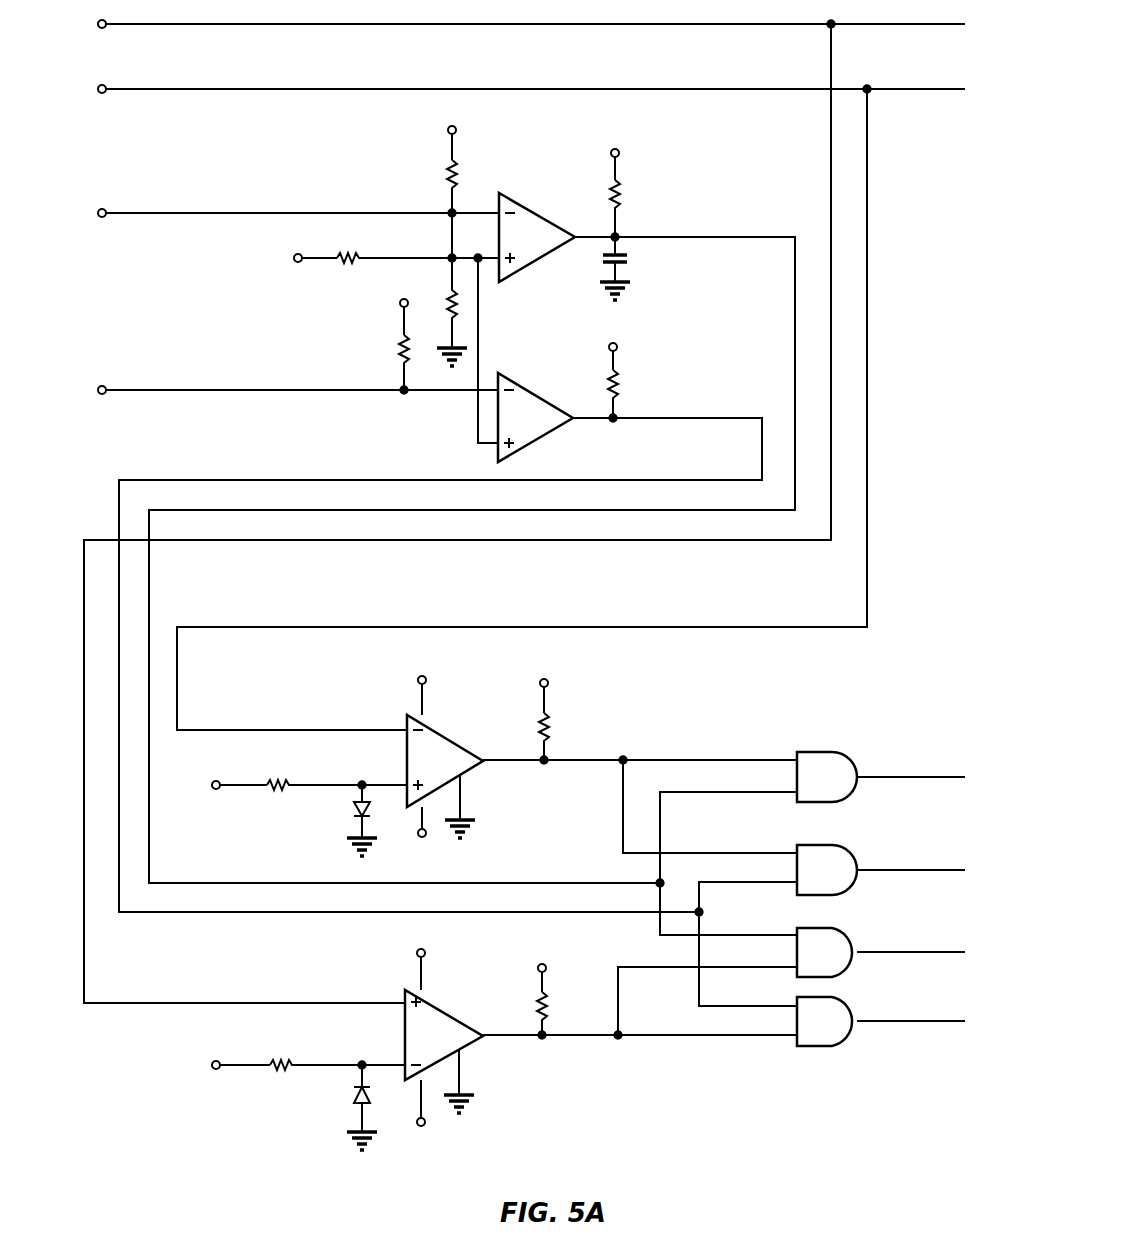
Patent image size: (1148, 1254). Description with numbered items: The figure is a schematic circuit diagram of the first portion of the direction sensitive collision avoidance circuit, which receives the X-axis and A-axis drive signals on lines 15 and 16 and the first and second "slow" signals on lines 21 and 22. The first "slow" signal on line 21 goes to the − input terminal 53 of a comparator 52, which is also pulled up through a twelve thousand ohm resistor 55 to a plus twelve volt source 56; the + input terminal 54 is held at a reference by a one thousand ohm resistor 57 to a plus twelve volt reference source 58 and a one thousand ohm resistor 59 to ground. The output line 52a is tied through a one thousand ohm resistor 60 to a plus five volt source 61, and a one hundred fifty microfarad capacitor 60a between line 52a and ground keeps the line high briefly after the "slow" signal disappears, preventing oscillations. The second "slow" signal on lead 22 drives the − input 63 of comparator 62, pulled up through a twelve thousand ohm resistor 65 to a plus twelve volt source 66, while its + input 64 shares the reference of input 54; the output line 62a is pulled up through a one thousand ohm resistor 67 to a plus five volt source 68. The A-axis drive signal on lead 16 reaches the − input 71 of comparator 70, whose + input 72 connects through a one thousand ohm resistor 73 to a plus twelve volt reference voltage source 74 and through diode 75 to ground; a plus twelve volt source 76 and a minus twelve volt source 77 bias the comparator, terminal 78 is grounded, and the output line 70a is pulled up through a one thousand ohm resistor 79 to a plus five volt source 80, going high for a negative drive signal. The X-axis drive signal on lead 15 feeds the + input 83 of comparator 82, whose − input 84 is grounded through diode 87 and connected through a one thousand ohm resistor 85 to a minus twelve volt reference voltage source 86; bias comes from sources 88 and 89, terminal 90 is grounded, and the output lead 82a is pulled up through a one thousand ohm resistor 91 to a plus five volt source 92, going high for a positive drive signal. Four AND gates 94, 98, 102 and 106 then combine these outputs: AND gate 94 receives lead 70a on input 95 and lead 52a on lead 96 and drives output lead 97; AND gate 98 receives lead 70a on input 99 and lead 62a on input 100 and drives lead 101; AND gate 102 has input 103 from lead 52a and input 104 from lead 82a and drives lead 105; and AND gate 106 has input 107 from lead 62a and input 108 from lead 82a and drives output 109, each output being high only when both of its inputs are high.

The line 15 is at (436, 22).
The line 16 is at (434, 88).
The line 21 is at (346, 211).
The lead 22 is at (368, 393).
The comparator 52 is at (536, 215).
The output line 52a is at (582, 235).
The − input terminal 53 is at (490, 213).
The + input terminal 54 is at (497, 280).
The 12,000 ohm resistor 55 is at (446, 176).
The +12 volt source 56 is at (447, 131).
The 1,000 ohm resistor 57 is at (345, 266).
The +12 volt reference source 58 is at (300, 266).
The 1,000 ohm resistor 59 is at (460, 318).
The 1,000 ohm resistor 60 is at (628, 198).
The 150 microfarad capacitor 60a is at (630, 263).
The +5 volt source 61 is at (622, 155).
The comparator 62 is at (555, 410).
The output line 62a is at (580, 421).
The − input 63 is at (492, 388).
The + input 64 is at (478, 446).
The 12,000 ohm resistor 65 is at (398, 347).
The +12 volt source 66 is at (400, 308).
The 1,000 ohm resistor 67 is at (622, 390).
The +5 volt source 68 is at (620, 349).
The comparator 70 is at (440, 735).
The output line 70a is at (494, 757).
The − input 71 is at (400, 722).
The + input 72 is at (400, 785).
The 1,000 ohm resistor 73 is at (286, 786).
The +12 volt reference voltage source 74 is at (217, 793).
The diode 75 is at (353, 808).
The +12 volt source 76 is at (428, 680).
The −12 volt source 77 is at (417, 833).
The terminal 78 is at (465, 790).
The 1,000 ohm resistor 79 is at (552, 722).
The +5 volt source 80 is at (550, 684).
The comparator 82 is at (448, 1016).
The output lead 82a is at (505, 1033).
The + input 83 is at (397, 997).
The − input 84 is at (400, 1062).
The 1,000 ohm resistor 85 is at (286, 1066).
The −12 volt reference voltage source 86 is at (217, 1073).
The diode 87 is at (353, 1102).
The source 88 is at (428, 953).
The source 89 is at (418, 1105).
The terminal 90 is at (462, 1073).
The 1,000 ohm resistor 91 is at (550, 1005).
The +5 volt source 92 is at (548, 968).
The AND gate 94 is at (845, 747).
The input 95 is at (795, 758).
The lead 96 is at (790, 797).
The output lead 97 is at (857, 777).
The AND gate 98 is at (838, 851).
The input 99 is at (795, 851).
The input 100 is at (790, 886).
The lead 101 is at (857, 870).
The AND gate 102 is at (838, 936).
The input 103 is at (795, 934).
The input 104 is at (790, 970).
The lead 105 is at (857, 952).
The AND gate 106 is at (838, 1009).
The input 107 is at (795, 1004).
The input 108 is at (785, 1040).
The output 109 is at (857, 1021).